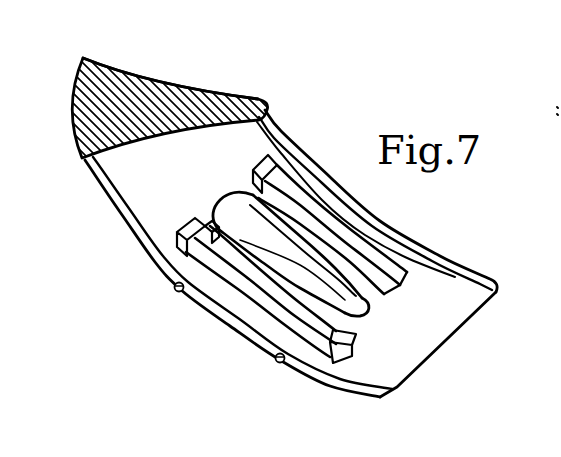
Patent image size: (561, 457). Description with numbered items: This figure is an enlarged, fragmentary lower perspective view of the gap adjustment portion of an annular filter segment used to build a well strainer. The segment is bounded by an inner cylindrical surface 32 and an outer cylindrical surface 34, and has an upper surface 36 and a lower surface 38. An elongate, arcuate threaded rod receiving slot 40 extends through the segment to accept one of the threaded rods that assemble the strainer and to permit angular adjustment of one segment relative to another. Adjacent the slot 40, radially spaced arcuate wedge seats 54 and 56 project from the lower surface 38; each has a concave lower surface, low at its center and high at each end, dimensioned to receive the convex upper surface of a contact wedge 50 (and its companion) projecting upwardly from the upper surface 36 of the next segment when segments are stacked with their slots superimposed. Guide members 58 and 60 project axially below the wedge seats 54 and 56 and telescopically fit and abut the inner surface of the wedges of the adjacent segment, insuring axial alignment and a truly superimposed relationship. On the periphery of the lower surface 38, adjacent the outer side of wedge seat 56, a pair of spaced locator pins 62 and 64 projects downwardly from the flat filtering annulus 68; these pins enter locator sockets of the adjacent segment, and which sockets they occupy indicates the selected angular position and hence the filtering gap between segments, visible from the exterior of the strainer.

The inner cylindrical surface 32 is at (473, 286).
The outer cylindrical surface 34 is at (80, 72).
The upper surface 36 is at (147, 80).
The lower surface 38 is at (430, 337).
The threaded rod receiving slot 40 is at (366, 308).
The contact wedge 50 is at (494, 456).
The wedge seat 54 is at (257, 163).
The wedge seat 56 is at (352, 346).
The guide member 58 is at (243, 197).
The guide member 60 is at (352, 333).
The locator pin 62 is at (280, 364).
The locator pin 64 is at (178, 293).
The flat filtering annulus 68 is at (358, 387).